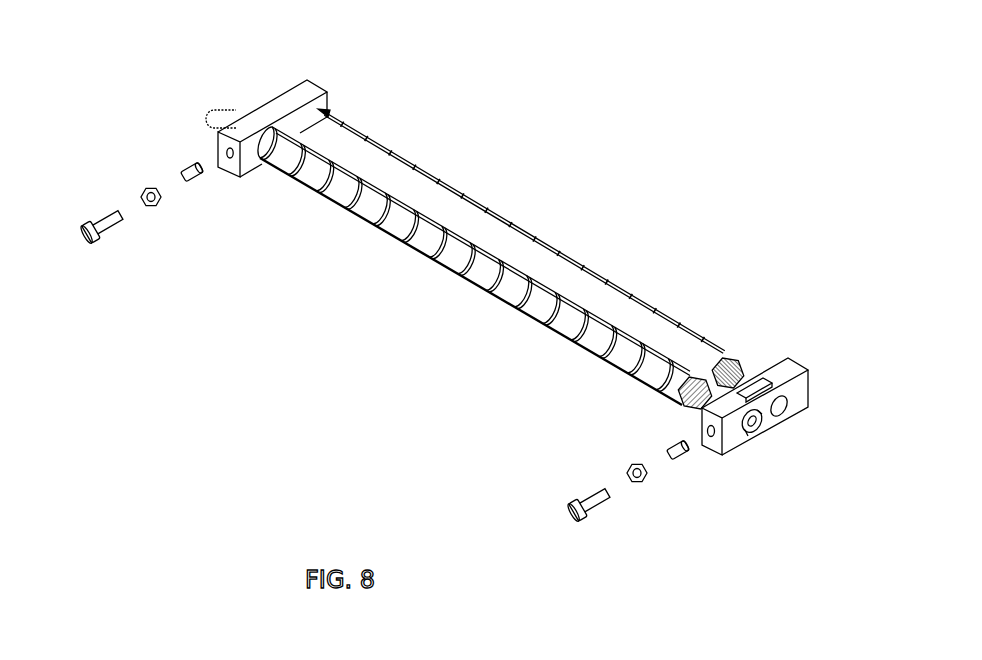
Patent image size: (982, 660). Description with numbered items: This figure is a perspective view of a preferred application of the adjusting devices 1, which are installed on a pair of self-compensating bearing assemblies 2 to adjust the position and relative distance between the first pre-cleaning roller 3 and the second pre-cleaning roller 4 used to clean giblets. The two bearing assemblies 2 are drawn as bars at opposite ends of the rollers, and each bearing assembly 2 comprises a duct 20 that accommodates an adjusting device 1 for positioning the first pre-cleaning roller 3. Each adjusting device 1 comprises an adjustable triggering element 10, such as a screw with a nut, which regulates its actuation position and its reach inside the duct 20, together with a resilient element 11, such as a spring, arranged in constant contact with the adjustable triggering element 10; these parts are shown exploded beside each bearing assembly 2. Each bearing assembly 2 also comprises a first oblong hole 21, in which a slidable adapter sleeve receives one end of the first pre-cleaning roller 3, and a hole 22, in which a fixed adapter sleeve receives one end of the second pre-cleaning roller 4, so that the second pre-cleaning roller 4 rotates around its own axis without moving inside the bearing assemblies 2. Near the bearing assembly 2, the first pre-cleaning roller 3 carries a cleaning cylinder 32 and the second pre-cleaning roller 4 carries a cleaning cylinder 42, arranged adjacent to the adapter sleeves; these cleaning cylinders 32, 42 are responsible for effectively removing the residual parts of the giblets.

The adjusting device 1 is at (461, 308).
The self-compensating bearing assembly 2 is at (263, 105).
The first pre-cleaning roller 3 is at (482, 288).
The second pre-cleaning roller 4 is at (534, 241).
The adjustable triggering element 10 is at (103, 234).
The resilient element 11 is at (194, 179).
The duct 20 is at (227, 150).
The first oblong hole 21 is at (752, 424).
The hole 22 is at (785, 416).
The cleaning cylinder 32 is at (705, 376).
The cleaning cylinder 42 is at (729, 358).